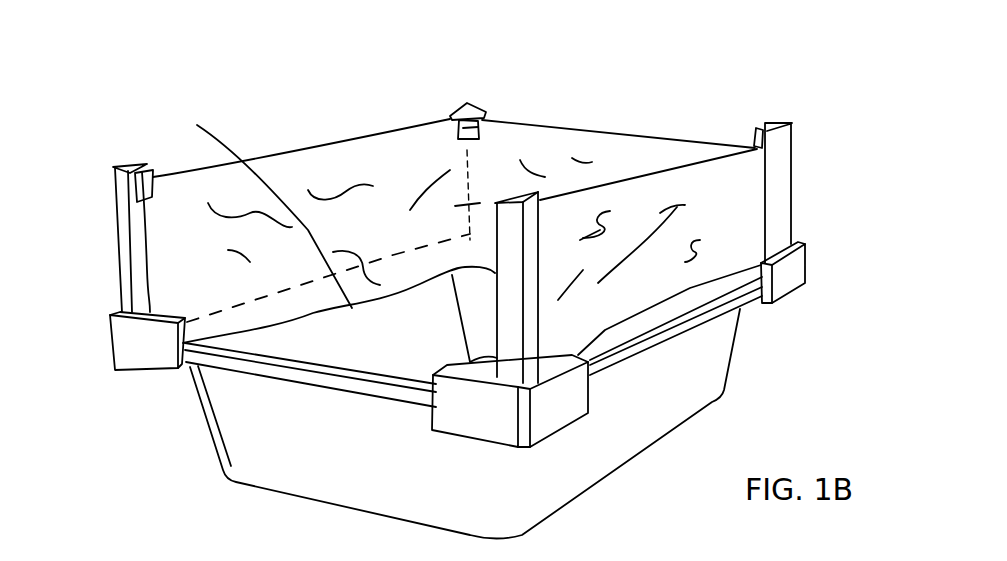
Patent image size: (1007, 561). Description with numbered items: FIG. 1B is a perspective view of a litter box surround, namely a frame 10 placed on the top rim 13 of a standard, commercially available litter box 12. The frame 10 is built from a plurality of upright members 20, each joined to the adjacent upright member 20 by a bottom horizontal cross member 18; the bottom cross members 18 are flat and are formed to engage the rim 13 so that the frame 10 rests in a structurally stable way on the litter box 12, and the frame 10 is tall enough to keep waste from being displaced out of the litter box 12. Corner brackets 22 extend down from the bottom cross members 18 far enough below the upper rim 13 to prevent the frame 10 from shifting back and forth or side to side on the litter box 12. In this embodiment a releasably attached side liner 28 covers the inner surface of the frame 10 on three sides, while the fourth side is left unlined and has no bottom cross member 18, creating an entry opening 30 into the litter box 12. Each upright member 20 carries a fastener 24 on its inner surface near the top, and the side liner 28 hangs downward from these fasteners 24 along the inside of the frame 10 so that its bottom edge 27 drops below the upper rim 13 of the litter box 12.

The frame 10 is at (757, 98).
The litter box 12 is at (755, 360).
The top rim 13 is at (200, 363).
The bottom horizontal cross member 18 is at (693, 300).
The upright member 20 is at (782, 187).
The corner bracket 22 is at (118, 337).
The fastener 24 is at (480, 122).
The bottom edge 27 is at (261, 206).
The side liner 28 is at (620, 148).
The entry opening 30 is at (367, 362).